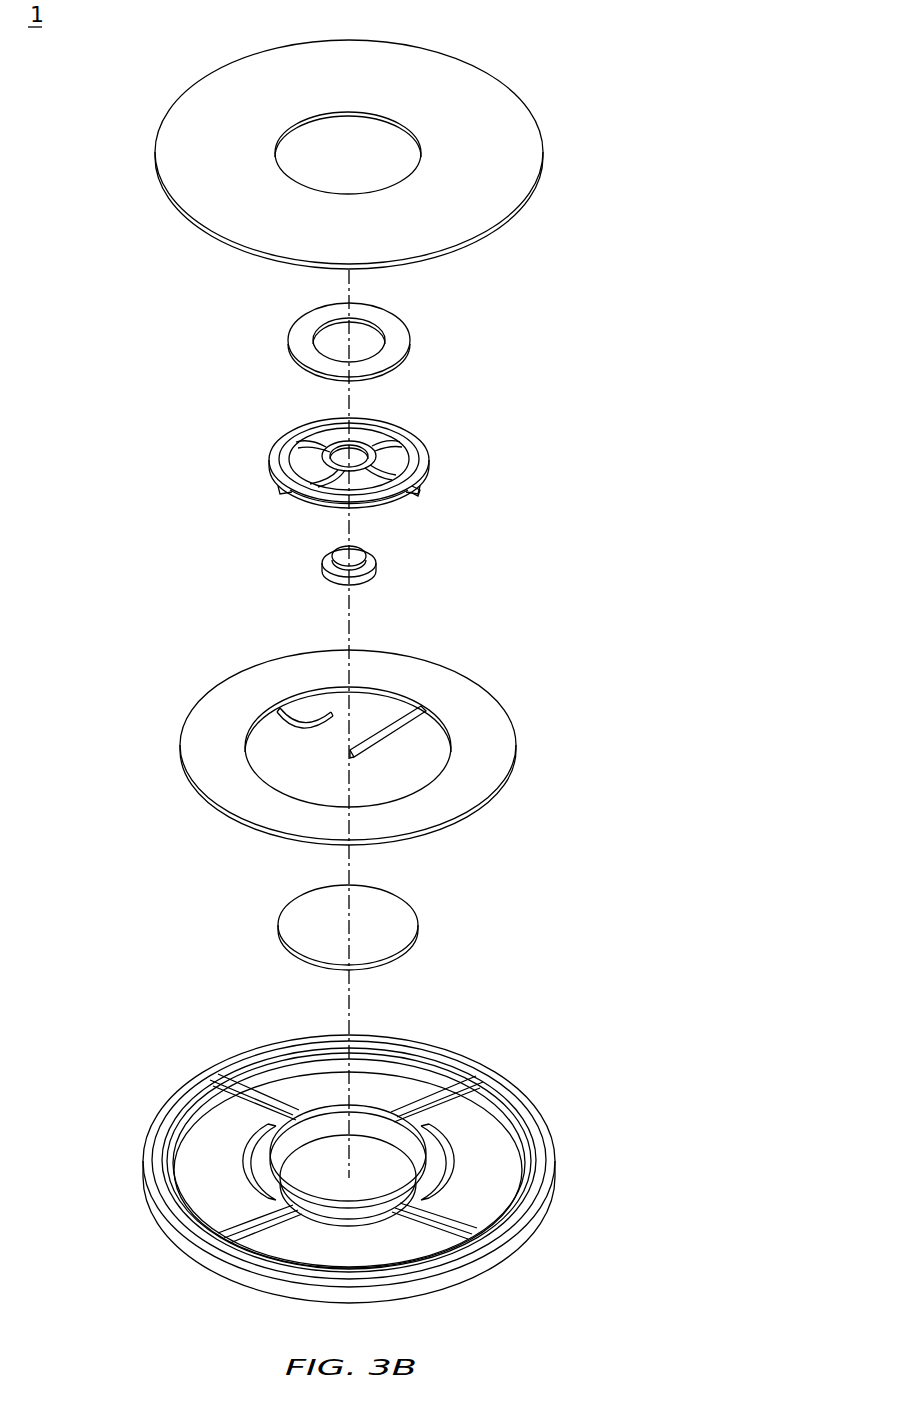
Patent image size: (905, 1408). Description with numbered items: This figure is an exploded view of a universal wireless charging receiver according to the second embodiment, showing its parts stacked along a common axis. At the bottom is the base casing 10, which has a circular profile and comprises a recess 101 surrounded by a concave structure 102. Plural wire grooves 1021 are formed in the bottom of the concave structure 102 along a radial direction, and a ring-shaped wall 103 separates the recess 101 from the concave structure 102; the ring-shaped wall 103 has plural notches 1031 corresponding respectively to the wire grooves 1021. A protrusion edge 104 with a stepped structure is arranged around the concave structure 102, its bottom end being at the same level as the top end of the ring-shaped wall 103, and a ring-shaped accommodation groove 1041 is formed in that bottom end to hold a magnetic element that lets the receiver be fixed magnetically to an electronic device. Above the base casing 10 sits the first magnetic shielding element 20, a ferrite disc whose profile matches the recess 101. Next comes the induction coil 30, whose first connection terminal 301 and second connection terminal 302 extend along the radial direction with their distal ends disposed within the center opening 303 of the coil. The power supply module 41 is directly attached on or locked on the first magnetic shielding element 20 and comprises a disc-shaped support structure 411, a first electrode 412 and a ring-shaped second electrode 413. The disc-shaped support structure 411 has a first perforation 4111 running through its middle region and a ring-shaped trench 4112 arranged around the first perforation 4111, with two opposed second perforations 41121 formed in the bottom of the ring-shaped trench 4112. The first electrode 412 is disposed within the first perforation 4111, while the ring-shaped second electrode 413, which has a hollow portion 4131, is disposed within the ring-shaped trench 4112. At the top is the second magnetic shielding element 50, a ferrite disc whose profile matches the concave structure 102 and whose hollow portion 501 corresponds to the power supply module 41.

The base casing 10 is at (340, 1150).
The recess 101 is at (318, 1167).
The concave structure 102 is at (404, 1090).
The wire grooves 1021 is at (243, 1226).
The ring-shaped wall 103 is at (415, 1118).
The notches 1031 is at (455, 1238).
The protrusion edge 104 is at (502, 1105).
The ring-shaped accommodation groove 1041 is at (167, 1157).
The first magnetic shielding element 20 is at (418, 928).
The induction coil 30 is at (502, 740).
The first connection terminal 301 is at (408, 714).
The second connection terminal 302 is at (300, 716).
The center opening 303 is at (307, 782).
The power supply module 41 is at (353, 464).
The disc-shaped support structure 411 is at (273, 478).
The first perforation 4111 is at (361, 458).
The ring-shaped trench 4112 is at (300, 462).
The second perforations 41121 is at (418, 487).
The first electrode 412 is at (322, 560).
The ring-shaped second electrode 413 is at (305, 338).
The hollow portion 4131 is at (358, 335).
The second magnetic shielding element 50 is at (532, 151).
The hollow portion 501 is at (389, 157).